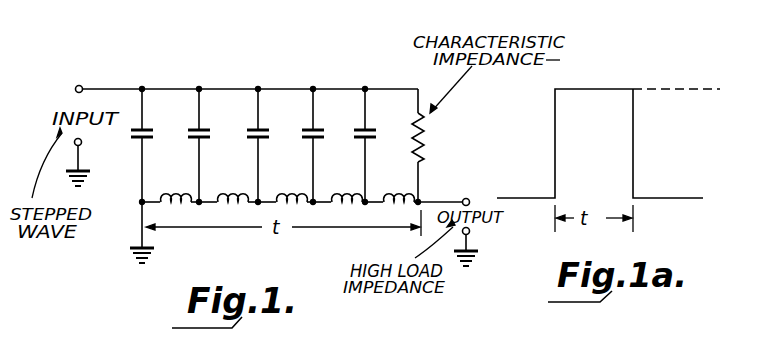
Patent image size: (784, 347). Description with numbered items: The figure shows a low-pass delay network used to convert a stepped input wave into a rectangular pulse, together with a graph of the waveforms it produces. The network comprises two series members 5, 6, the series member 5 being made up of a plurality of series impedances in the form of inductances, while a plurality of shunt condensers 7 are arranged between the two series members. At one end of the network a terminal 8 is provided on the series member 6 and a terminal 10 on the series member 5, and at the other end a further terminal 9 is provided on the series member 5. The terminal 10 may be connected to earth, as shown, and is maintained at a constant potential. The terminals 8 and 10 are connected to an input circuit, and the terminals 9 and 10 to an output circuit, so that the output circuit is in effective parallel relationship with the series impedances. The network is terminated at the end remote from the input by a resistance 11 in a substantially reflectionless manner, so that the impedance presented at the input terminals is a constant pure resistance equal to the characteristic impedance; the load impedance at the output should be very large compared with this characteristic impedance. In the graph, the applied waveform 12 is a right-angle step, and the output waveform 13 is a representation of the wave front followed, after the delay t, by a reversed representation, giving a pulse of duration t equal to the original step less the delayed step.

In FIG. 1, the series member 5 is at (300, 206).
In FIG. 1, the series member 6 is at (275, 89).
In FIG. 1, the shunt condensers 7 is at (247, 130).
In FIG. 1, the terminal 8 is at (143, 88).
In FIG. 1, the terminal 9 is at (424, 200).
In FIG. 1, the terminal 10 is at (140, 204).
In FIG. 1, the resistance 11 is at (430, 150).
In FIG. 1A, the applied waveform 12 is at (610, 88).
In FIG. 1A, the output waveform 13 is at (670, 189).